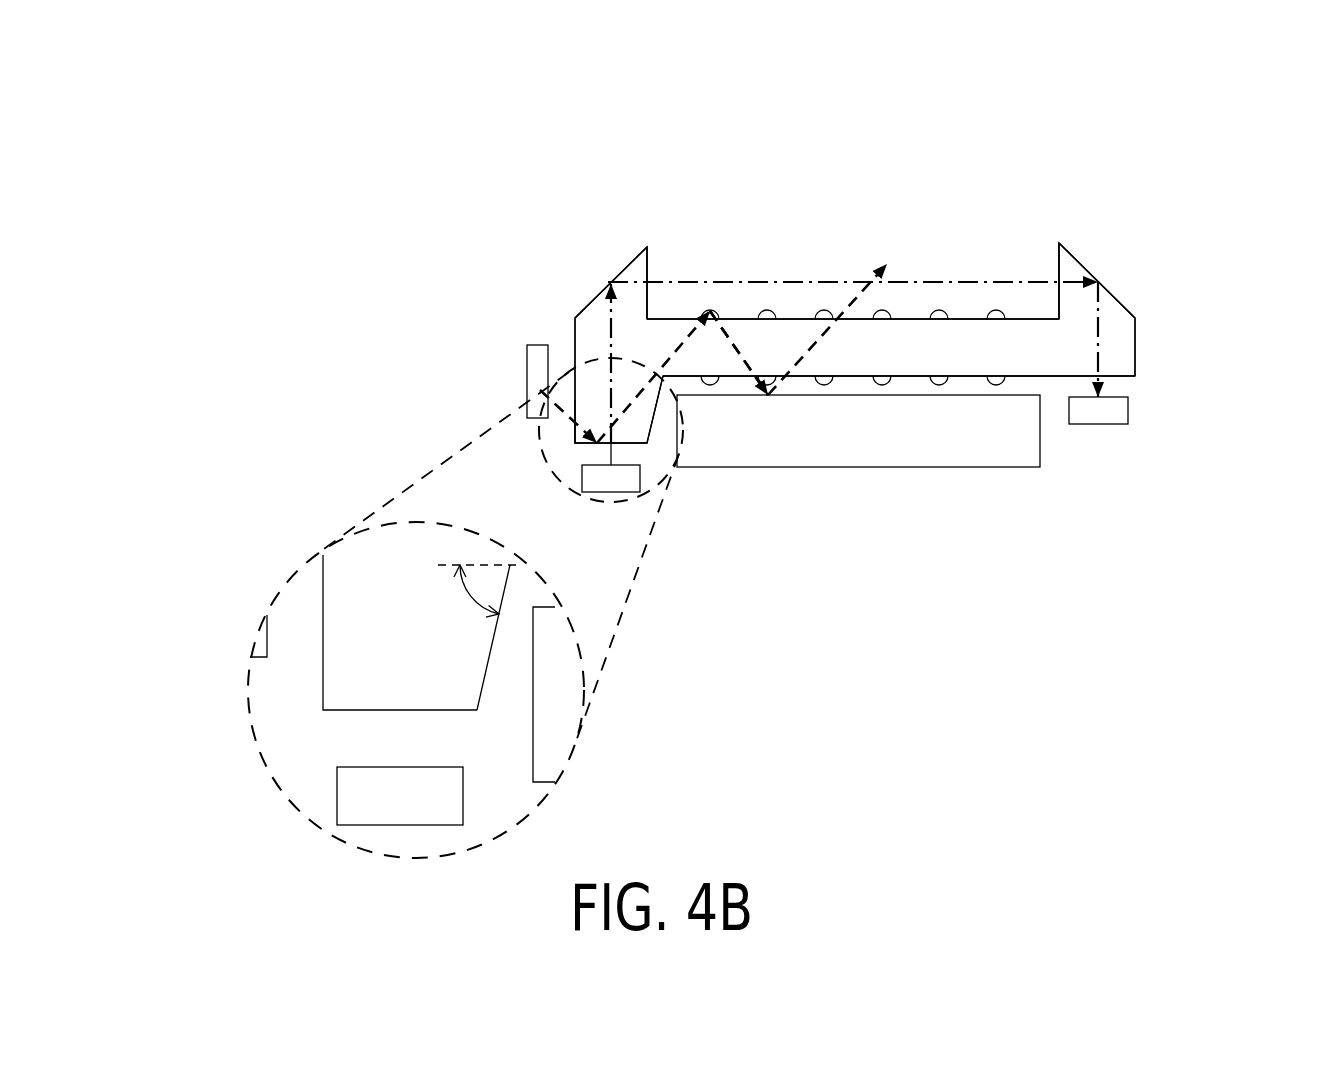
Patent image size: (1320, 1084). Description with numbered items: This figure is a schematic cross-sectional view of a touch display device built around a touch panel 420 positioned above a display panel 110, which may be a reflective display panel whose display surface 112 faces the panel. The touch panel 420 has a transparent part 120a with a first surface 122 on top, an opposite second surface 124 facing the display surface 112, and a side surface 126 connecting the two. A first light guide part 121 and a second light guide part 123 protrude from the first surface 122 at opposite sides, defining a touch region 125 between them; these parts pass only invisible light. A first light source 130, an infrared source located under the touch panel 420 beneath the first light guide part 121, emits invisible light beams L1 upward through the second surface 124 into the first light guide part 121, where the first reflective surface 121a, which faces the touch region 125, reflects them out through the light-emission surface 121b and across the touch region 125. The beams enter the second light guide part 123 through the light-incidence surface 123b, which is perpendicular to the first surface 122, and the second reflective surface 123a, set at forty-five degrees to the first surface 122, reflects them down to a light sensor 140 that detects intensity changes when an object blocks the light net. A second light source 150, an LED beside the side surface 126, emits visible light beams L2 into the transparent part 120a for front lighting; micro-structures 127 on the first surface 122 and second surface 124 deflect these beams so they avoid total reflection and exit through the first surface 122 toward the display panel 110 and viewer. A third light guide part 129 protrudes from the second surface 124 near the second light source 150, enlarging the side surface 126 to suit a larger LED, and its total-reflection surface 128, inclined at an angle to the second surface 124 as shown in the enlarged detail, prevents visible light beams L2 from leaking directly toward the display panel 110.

The touch panel 420 is at (586, 180).
The display panel 110 is at (1040, 453).
The display surface 112 is at (822, 392).
The transparent part 120a is at (960, 345).
The first light guide part 121 is at (642, 262).
The first reflective surface 121a is at (589, 307).
The light-emission surface 121b is at (650, 270).
The first surface 122 is at (746, 318).
The second light guide part 123 is at (1070, 264).
The second reflective surface 123a is at (1122, 308).
The light-incidence surface 123b is at (1057, 272).
The second surface 124 is at (971, 380).
The touch region 125 is at (876, 256).
The side surface 126 is at (575, 437).
The micro-structures 127 is at (827, 312).
The total-reflection surface 128 is at (487, 650).
The third light guide part 129 is at (353, 690).
The first light source 130 is at (398, 812).
The light sensor 140 is at (1128, 410).
The second light source 150 is at (527, 380).
The invisible light beams L1 is at (1115, 281).
The visible light beams L2 is at (795, 396).